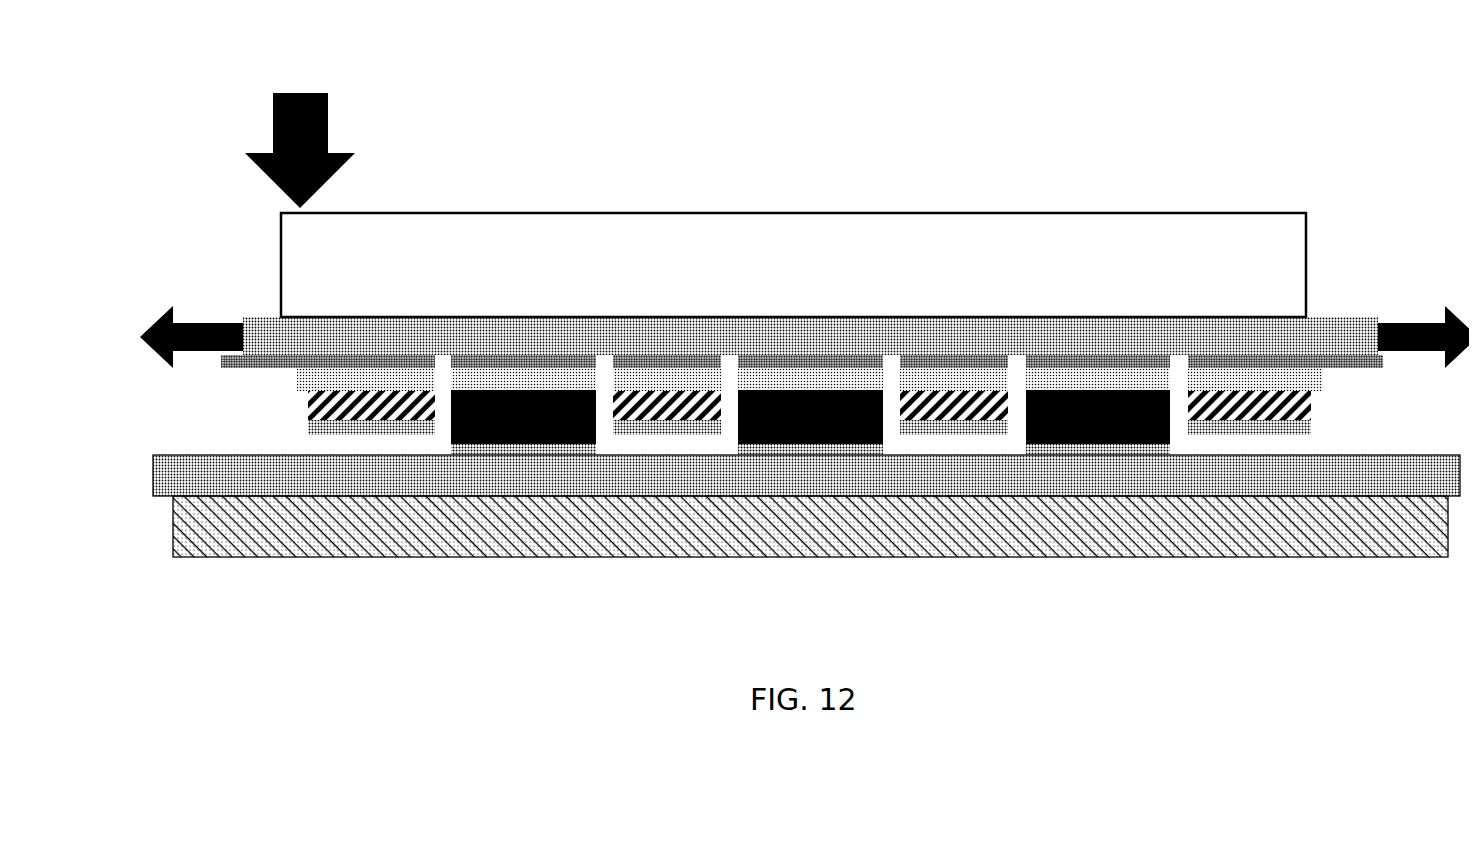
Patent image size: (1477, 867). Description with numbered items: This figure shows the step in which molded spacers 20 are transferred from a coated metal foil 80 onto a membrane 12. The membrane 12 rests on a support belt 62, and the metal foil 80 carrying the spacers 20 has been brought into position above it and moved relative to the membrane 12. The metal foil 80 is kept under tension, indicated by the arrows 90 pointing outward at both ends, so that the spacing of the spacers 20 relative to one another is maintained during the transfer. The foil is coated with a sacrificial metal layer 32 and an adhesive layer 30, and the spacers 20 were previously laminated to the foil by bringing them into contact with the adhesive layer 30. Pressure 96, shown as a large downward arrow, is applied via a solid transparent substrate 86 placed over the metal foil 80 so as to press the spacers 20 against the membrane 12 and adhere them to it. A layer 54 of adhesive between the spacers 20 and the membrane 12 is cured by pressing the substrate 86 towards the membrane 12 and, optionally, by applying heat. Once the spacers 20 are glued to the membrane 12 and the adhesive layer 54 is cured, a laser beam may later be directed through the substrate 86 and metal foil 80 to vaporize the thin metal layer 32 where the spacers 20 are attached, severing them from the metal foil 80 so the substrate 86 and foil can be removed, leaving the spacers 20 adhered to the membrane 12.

The pressure 96 is at (265, 95).
The solid transparent substrate 86 is at (962, 273).
The metal foil 80 is at (840, 342).
The arrows 90 is at (198, 312).
The sacrificial metal layer 32 is at (208, 353).
The adhesive layer 30 is at (1315, 373).
The spacers 20 is at (498, 423).
The layer of adhesive 54 is at (393, 428).
The membrane 12 is at (1027, 483).
The support belt 62 is at (1040, 535).